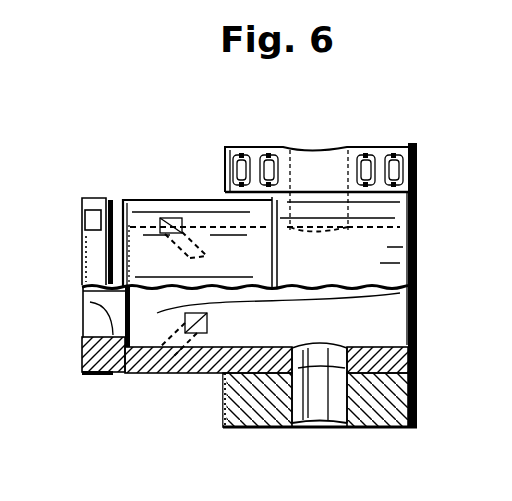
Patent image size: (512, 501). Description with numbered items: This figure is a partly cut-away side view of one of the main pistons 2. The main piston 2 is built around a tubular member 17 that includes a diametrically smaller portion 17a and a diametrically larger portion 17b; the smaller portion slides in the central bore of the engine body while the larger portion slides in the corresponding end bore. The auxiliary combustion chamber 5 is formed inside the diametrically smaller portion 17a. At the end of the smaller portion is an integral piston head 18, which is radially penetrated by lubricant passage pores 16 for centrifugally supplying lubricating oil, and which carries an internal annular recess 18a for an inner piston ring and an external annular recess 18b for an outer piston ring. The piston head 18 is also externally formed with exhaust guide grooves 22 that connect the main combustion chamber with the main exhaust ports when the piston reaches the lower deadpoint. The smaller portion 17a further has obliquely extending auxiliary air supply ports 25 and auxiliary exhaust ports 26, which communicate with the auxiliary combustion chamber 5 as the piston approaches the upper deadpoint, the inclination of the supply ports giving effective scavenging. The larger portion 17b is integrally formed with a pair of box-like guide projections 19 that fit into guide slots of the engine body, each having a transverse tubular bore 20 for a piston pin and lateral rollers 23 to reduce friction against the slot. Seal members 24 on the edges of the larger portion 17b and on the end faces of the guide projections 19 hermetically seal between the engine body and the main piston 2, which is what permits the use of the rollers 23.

The main piston 2 is at (95, 100).
The auxiliary combustion chamber 5 is at (417, 293).
The lubricant passage pores 16 is at (82, 291).
The tubular member 17 is at (145, 373).
The diametrically smaller portion 17a is at (208, 197).
The diametrically larger portion 17b is at (420, 238).
The piston head 18 is at (88, 348).
The internal annular recess 18a is at (82, 309).
The external annular recess 18b is at (112, 210).
The box-like guide projections 19 is at (291, 147).
The transverse tubular bore 20 is at (315, 410).
The exhaust guide grooves 22 is at (88, 220).
The rollers 23 is at (418, 161).
The seal members 24 is at (417, 327).
The auxiliary air supply ports 25 is at (142, 378).
The auxiliary exhaust ports 26 is at (175, 220).